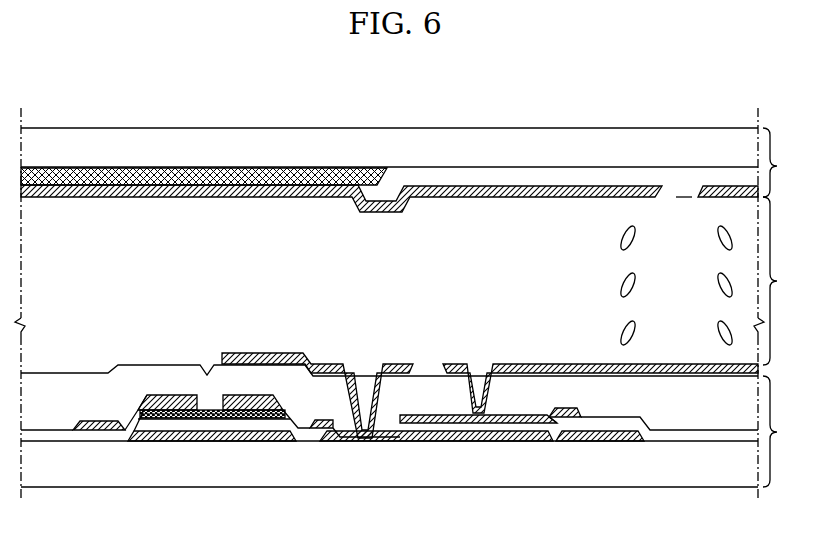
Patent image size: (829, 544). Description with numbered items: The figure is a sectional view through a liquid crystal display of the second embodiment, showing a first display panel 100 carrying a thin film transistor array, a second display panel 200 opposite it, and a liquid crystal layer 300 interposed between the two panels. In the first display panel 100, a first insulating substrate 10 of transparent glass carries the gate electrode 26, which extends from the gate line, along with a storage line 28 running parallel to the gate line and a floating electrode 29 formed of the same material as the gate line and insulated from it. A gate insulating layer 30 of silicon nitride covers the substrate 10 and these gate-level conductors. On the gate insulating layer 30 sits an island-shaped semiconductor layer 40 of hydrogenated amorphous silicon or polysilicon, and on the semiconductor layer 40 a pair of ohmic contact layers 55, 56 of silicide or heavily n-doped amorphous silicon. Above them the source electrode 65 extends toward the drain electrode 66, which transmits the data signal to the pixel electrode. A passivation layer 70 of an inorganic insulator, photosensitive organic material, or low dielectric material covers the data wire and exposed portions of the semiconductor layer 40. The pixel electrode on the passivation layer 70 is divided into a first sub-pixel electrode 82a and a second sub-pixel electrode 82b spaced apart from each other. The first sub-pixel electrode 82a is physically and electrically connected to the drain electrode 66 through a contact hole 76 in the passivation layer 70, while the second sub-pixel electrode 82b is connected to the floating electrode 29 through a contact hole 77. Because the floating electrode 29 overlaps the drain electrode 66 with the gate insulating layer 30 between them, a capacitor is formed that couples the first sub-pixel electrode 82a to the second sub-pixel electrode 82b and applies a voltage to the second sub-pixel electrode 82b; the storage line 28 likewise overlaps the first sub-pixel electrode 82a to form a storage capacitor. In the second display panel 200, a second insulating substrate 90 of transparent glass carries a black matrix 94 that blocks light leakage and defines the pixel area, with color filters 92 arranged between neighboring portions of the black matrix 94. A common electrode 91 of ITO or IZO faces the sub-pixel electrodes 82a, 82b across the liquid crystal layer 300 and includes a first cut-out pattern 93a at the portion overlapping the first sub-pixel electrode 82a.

The first insulating substrate 10 is at (713, 455).
The gate electrode 26 is at (267, 441).
The storage line 28 is at (592, 443).
The floating electrode 29 is at (332, 441).
The gate insulating layer 30 is at (453, 415).
The semiconductor layer 40 is at (150, 441).
The ohmic contact layer 55 is at (182, 441).
The ohmic contact layer 56 is at (233, 441).
The source electrode 65 is at (160, 441).
The drain electrode 66 is at (250, 441).
The passivation layer 70 is at (668, 418).
The contact hole 76 is at (486, 347).
The contact hole 77 is at (361, 347).
The first sub-pixel electrode 82a is at (513, 374).
The second sub-pixel electrode 82b is at (380, 392).
The second insulating substrate 90 is at (727, 160).
The common electrode 91 is at (521, 190).
The color filters 92 is at (433, 182).
The first cut-out pattern 93a is at (683, 196).
The black matrix 94 is at (311, 168).
The first display panel 100 is at (787, 431).
The second display panel 200 is at (787, 162).
The liquid crystal layer 300 is at (714, 281).